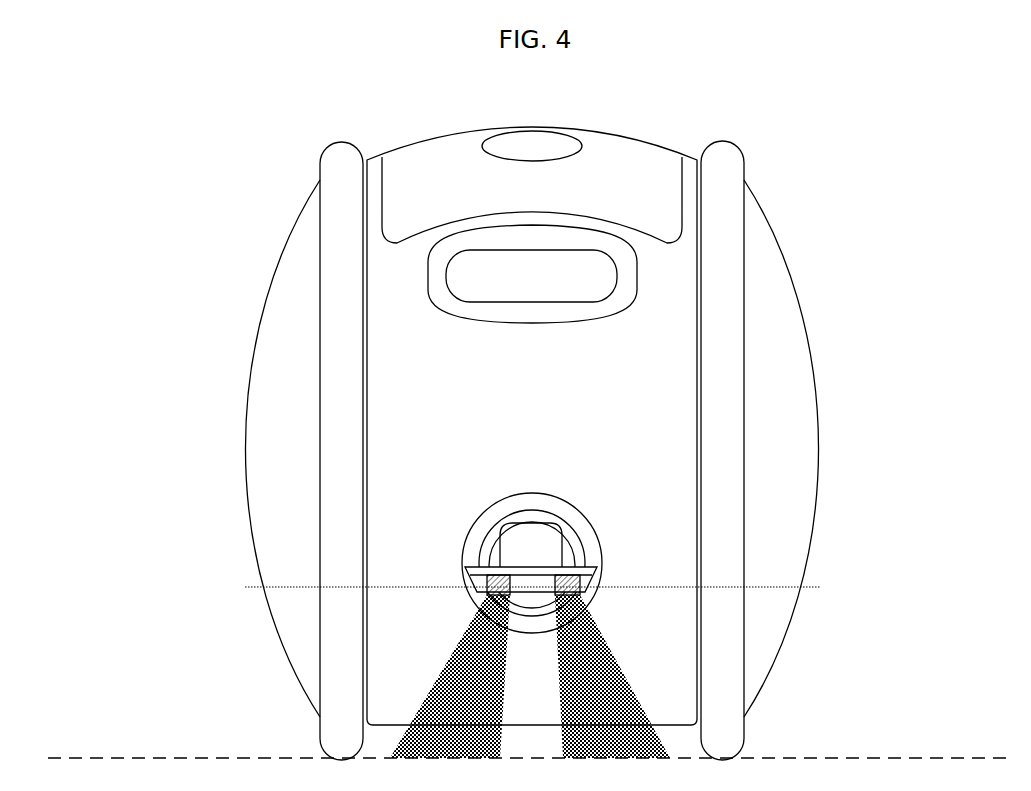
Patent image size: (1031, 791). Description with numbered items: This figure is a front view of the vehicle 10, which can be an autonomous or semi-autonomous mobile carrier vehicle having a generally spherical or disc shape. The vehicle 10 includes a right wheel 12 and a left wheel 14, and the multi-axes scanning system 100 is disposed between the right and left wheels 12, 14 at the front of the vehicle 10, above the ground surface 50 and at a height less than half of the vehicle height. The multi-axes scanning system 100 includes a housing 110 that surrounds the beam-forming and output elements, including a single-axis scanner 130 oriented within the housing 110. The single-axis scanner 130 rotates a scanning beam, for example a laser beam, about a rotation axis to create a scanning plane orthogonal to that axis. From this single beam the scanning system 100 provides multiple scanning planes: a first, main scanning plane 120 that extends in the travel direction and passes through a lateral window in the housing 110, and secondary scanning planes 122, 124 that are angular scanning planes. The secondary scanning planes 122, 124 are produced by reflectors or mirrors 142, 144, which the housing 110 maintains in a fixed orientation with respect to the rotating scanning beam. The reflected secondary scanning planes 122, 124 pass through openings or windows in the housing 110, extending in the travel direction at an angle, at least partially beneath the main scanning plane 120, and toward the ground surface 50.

The vehicle 10 is at (846, 167).
The right wheel 12 is at (712, 175).
The left wheel 14 is at (337, 163).
The ground surface 50 is at (530, 745).
The multi-axes scanning system 100 is at (507, 557).
The housing 110 is at (578, 526).
The main scanning plane 120 is at (817, 587).
The secondary scanning plane 122 is at (578, 635).
The secondary scanning plane 124 is at (478, 651).
The single-axis scanner 130 is at (542, 548).
The reflector 142 is at (597, 574).
The reflector 144 is at (730, 578).